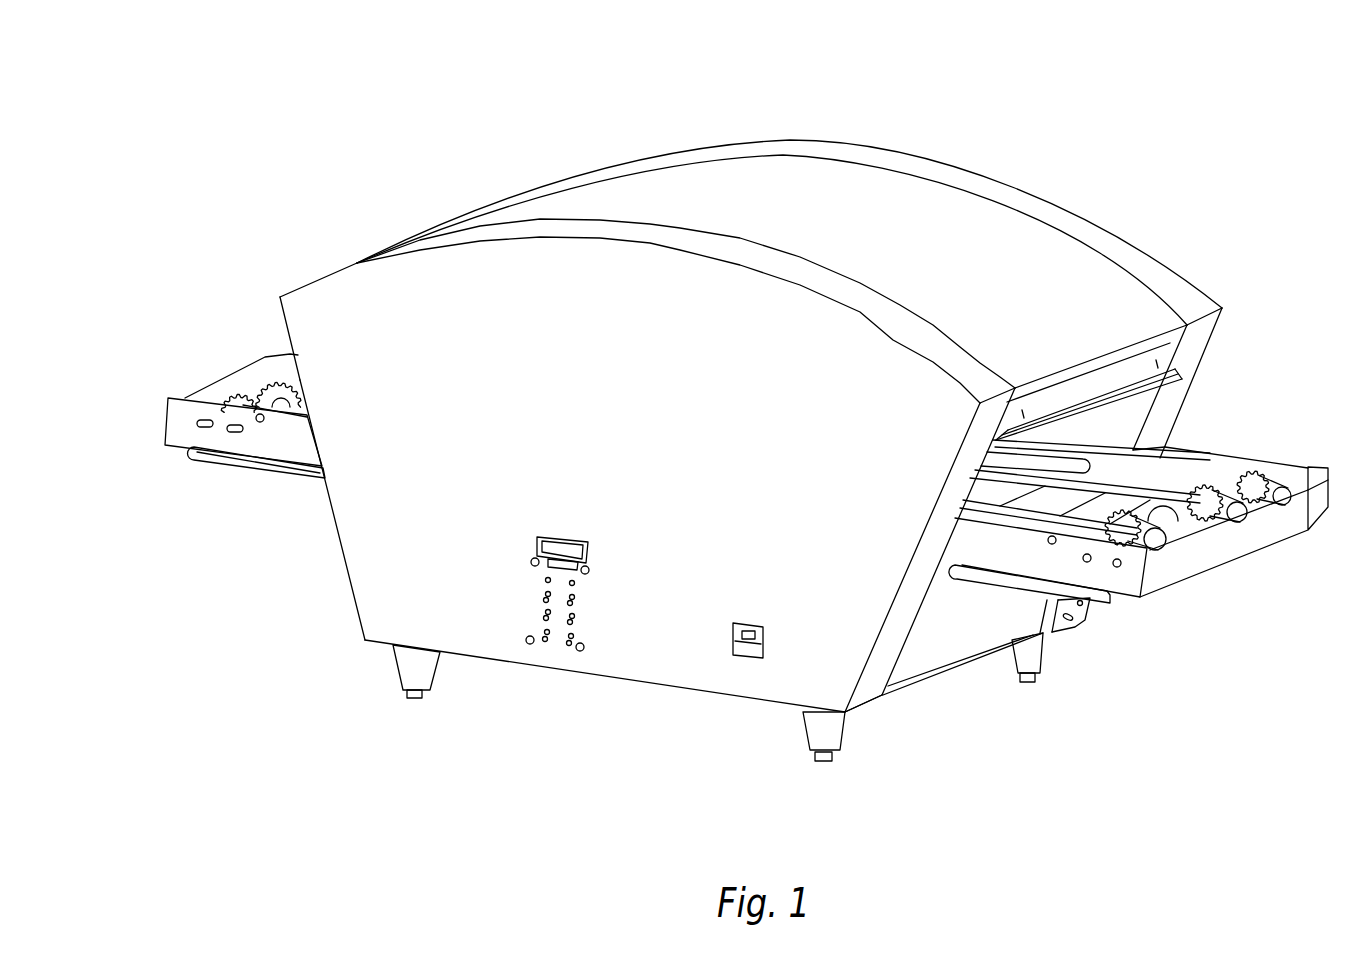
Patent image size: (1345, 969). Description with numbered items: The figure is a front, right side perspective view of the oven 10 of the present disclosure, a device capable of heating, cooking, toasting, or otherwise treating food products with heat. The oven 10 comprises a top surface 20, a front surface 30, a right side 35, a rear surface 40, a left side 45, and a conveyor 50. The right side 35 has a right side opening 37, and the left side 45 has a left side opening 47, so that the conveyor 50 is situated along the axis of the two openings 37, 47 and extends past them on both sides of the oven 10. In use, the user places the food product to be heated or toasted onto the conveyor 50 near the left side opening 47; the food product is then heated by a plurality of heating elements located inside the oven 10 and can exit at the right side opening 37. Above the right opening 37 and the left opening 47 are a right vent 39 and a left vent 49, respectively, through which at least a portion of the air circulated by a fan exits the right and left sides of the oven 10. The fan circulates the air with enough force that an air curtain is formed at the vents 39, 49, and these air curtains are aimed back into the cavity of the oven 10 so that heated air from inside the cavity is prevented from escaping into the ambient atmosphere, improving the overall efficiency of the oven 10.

The oven 10 is at (349, 119).
The top surface 20 is at (875, 200).
The front surface 30 is at (407, 310).
The right side 35 is at (1215, 375).
The right side opening 37 is at (1120, 436).
The right vent 39 is at (1130, 360).
The rear surface 40 is at (997, 177).
The left side 45 is at (262, 357).
The left side opening 47 is at (270, 334).
The left vent 49 is at (283, 325).
The conveyor 50 is at (233, 482).